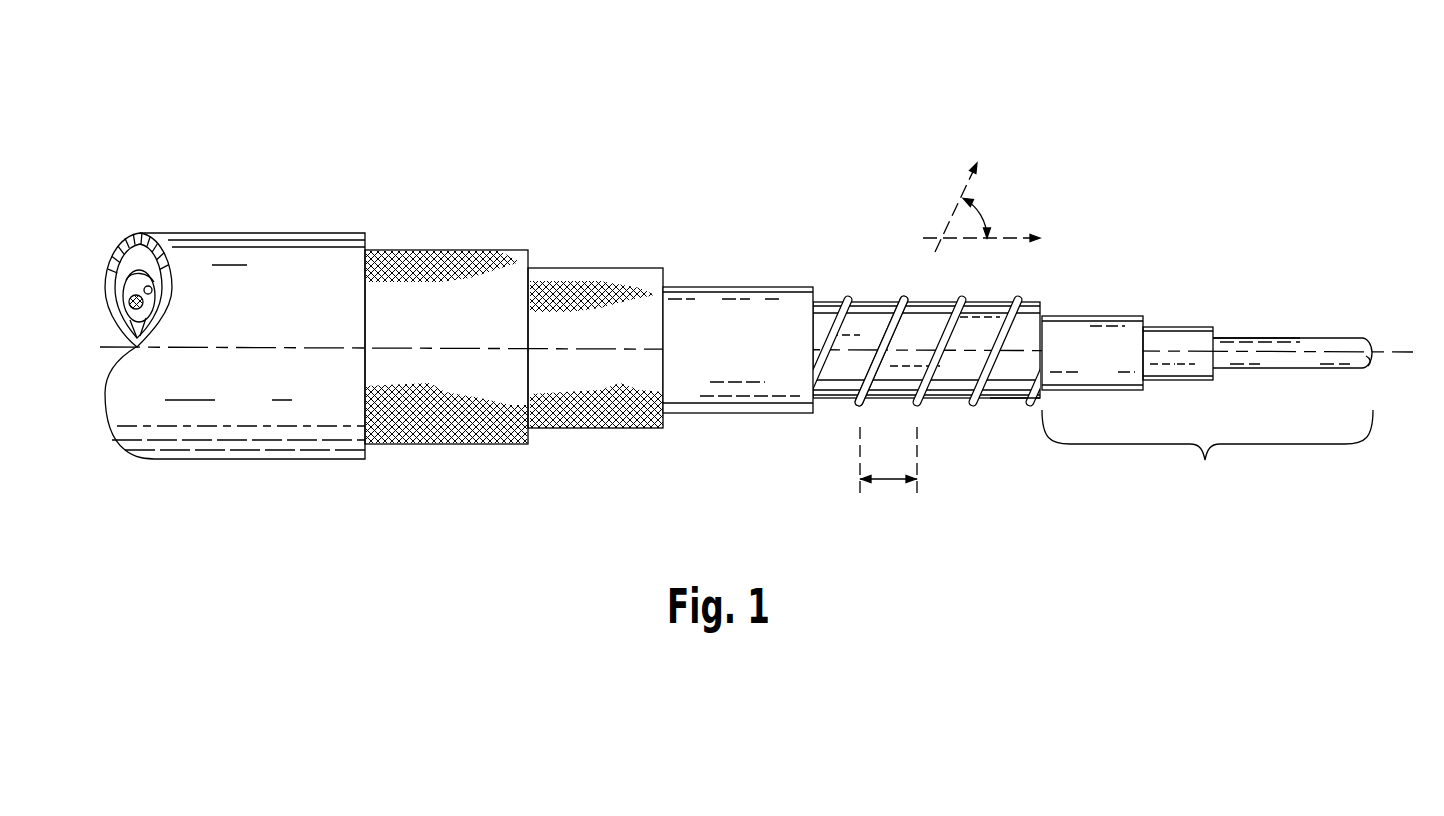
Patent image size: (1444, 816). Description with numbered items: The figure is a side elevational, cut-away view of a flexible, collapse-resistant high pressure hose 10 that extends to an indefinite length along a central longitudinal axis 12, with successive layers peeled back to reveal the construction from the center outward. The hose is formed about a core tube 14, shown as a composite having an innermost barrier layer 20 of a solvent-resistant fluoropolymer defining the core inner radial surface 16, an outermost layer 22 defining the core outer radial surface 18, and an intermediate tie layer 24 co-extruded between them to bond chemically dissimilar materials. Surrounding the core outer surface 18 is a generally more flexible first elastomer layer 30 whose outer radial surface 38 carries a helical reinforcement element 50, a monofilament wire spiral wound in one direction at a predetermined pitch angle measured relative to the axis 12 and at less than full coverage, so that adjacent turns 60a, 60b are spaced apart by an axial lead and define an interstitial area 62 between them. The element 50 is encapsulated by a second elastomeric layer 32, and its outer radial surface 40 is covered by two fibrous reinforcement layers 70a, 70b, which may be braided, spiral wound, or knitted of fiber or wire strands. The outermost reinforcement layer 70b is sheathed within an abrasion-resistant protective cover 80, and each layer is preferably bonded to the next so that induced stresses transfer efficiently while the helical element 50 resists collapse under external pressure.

The collapse-resistant high pressure hose 10 is at (1105, 115).
The central longitudinal axis 12 is at (1400, 353).
The core tube 14 is at (1201, 468).
The inner radial surface of core tube 16 is at (1371, 362).
The outer radial surface of core tube 18 is at (1083, 317).
The barrier layer 20 is at (1319, 329).
The outermost layer of core tube 22 is at (1143, 317).
The intermediate tie layer 24 is at (1216, 338).
The first elastomer layer 30 is at (1040, 399).
The second elastomeric layer 32 is at (948, 350).
The outer radial surface of first elastomer layer 38 is at (987, 300).
The outer radial surface of second elastomeric layer 40 is at (745, 287).
The helical reinforcement element 50 is at (923, 393).
The first turn of helical element 60a is at (838, 382).
The second turn of helical element 60b is at (941, 385).
The interstitial area 62 is at (922, 322).
The first fibrous reinforcement layer 70a is at (663, 272).
The outermost fibrous reinforcement layer 70b is at (530, 260).
The protective cover 80 is at (367, 236).